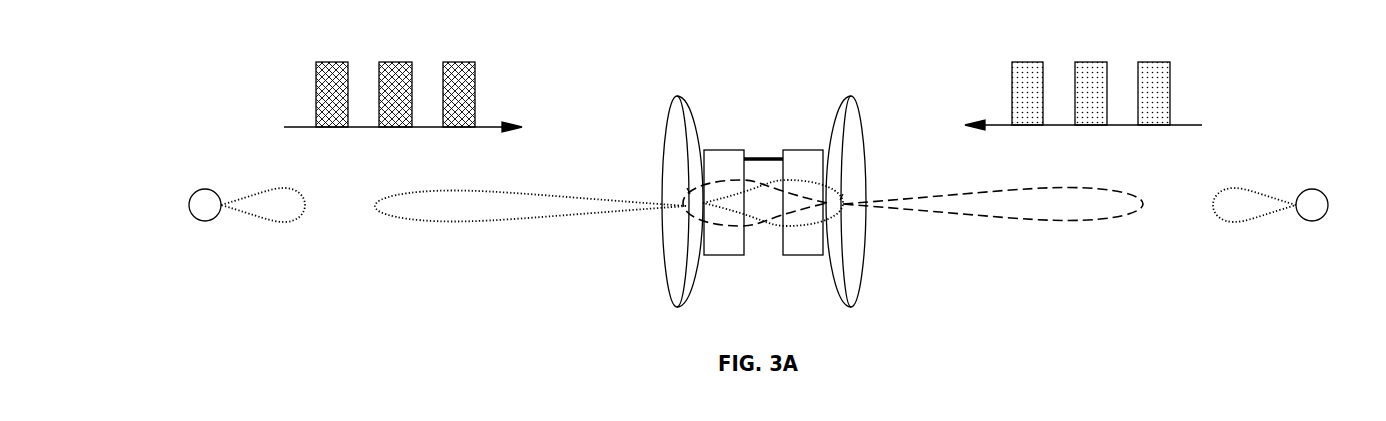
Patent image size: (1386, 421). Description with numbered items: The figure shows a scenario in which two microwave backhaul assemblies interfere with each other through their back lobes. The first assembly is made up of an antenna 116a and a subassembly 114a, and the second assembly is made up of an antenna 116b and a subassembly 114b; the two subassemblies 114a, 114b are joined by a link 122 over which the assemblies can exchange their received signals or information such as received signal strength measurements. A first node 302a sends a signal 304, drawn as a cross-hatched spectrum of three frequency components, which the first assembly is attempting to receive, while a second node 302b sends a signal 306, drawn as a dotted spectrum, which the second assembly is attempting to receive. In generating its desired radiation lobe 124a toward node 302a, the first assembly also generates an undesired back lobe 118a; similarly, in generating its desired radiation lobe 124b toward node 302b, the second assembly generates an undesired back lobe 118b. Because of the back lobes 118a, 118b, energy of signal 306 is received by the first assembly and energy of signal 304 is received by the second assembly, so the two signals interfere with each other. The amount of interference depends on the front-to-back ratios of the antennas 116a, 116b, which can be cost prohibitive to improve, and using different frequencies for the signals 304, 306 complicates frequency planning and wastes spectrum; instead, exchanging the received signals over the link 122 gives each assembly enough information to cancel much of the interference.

The subassembly 114a is at (731, 150).
The subassembly 114b is at (802, 150).
The antenna 116a is at (677, 96).
The antenna 116b is at (864, 86).
The back lobe 118a is at (841, 197).
The back lobe 118b is at (689, 191).
The link 122 is at (752, 157).
The desired radiation lobe 124a is at (486, 191).
The desired radiation lobe 124b is at (1021, 190).
The node 302a is at (205, 189).
The node 302b is at (1311, 189).
The signal 304 is at (271, 96).
The signal 306 is at (989, 103).